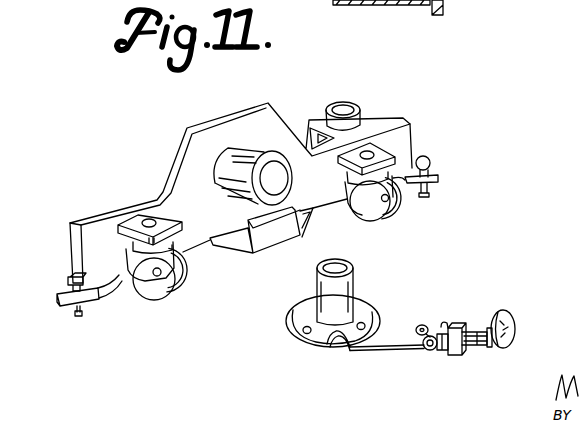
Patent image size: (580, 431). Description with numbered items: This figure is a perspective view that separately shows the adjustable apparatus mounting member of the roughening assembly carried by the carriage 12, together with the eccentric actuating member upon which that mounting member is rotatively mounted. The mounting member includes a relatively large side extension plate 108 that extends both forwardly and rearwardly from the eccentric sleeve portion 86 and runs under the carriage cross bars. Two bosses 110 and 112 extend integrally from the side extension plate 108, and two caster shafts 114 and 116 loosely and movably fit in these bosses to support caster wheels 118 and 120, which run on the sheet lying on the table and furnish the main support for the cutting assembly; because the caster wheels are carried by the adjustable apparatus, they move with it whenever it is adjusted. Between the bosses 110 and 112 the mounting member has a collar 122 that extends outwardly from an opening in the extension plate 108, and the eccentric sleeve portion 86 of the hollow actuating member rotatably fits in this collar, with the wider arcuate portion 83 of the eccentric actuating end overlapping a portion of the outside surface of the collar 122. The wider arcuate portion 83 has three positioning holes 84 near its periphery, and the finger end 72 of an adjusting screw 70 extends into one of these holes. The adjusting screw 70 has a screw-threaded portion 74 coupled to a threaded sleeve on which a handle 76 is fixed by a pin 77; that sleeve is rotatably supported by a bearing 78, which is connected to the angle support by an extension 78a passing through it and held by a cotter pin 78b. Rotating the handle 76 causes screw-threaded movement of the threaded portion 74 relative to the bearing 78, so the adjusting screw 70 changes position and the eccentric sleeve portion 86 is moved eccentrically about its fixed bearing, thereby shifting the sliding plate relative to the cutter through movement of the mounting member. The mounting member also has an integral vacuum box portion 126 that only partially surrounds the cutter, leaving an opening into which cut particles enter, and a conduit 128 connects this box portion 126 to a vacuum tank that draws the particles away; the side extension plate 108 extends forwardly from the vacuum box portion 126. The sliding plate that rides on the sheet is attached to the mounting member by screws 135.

The carriage 12 is at (132, 252).
The adjusting screw 70 is at (392, 351).
The finger end 72 is at (333, 342).
The screw-threaded portion 74 is at (425, 350).
The handle 76 is at (505, 313).
The pin 77 is at (510, 326).
The bearing 78 is at (460, 354).
The extension 78a is at (446, 325).
The cotter pin 78b is at (420, 326).
The wider arcuate portion 83 is at (292, 334).
The positioning holes 84 is at (304, 326).
The eccentric sleeve portion 86 is at (345, 290).
The side extension plate 108 is at (192, 157).
The boss 110 is at (374, 171).
The boss 112 is at (138, 225).
The caster shaft 114 is at (348, 167).
The caster shaft 116 is at (150, 227).
The caster wheel 118 is at (352, 203).
The caster wheel 120 is at (190, 247).
The collar 122 is at (242, 167).
The vacuum box portion 126 is at (310, 138).
The conduit 128 is at (358, 118).
The screws 135 is at (433, 162).